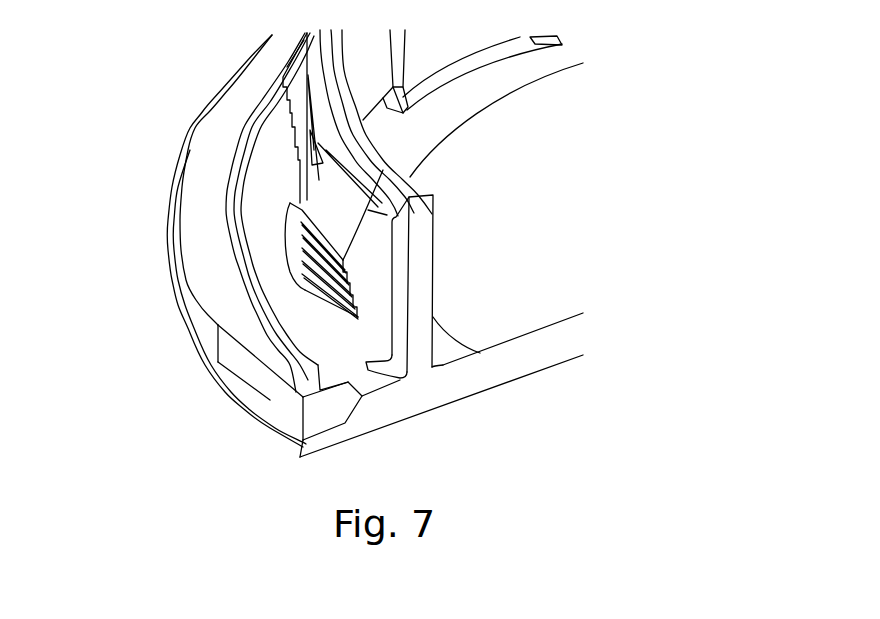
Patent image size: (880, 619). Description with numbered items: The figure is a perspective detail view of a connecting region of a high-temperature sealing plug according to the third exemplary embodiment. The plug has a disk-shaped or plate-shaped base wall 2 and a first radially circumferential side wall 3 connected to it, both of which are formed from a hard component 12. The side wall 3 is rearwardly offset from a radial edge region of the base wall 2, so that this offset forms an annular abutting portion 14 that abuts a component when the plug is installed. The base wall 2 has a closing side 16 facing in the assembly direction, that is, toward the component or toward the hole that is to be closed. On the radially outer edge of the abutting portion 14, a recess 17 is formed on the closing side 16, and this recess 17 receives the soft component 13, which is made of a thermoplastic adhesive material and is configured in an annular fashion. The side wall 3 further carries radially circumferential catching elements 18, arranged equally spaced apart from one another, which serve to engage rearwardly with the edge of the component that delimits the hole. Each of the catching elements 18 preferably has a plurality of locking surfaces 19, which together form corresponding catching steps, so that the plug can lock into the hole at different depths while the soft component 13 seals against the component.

The base wall 2 is at (517, 363).
The first radially circumferential side wall 3 is at (417, 298).
The hard component 12 is at (542, 132).
The soft component 13 is at (227, 305).
The annular abutting portion 14 is at (367, 380).
The closing side 16 is at (267, 197).
The recess 17 is at (321, 437).
The catching elements 18 is at (338, 204).
The locking surfaces 19 is at (312, 290).